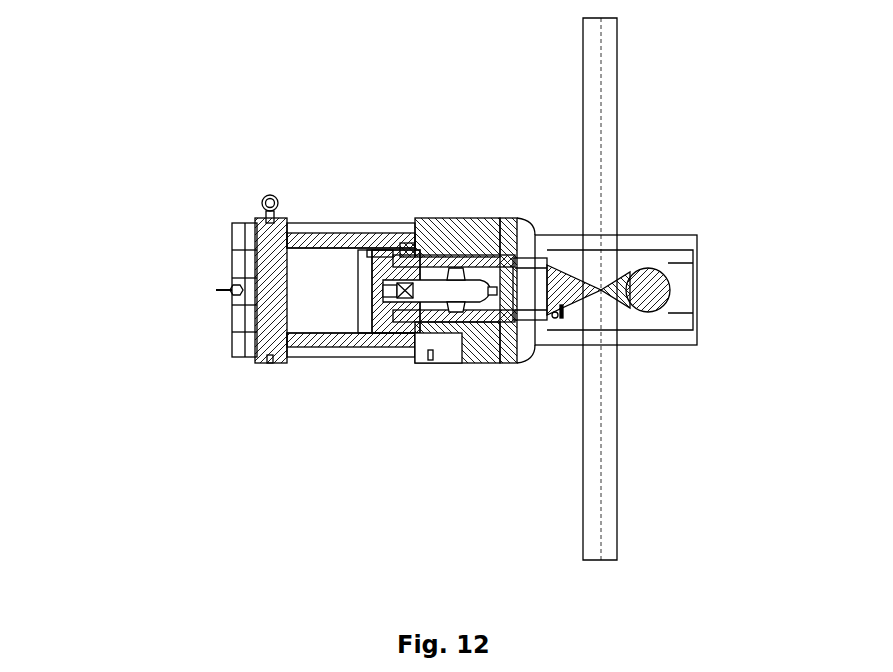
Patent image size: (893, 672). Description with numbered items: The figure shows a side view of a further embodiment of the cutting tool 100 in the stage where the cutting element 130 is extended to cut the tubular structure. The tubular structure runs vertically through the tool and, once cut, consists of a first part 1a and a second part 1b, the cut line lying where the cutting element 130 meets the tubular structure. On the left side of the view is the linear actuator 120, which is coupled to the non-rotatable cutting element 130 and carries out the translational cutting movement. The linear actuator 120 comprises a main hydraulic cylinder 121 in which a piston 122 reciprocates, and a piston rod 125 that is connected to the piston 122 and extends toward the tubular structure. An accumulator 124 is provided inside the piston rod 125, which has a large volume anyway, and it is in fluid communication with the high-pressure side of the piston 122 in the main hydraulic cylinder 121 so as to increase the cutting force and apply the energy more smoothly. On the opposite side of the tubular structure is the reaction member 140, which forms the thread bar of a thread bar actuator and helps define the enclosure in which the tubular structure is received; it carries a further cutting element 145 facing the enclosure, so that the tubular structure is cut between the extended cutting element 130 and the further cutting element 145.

The cutting tool 100 is at (112, 123).
The first part 1a is at (608, 432).
The second part 1b is at (608, 173).
The linear actuator 120 is at (233, 315).
The main hydraulic cylinder 121 is at (322, 335).
The piston 122 is at (395, 243).
The accumulator 124 is at (452, 288).
The piston rod 125 is at (468, 240).
The cutting element 130 is at (567, 252).
The reaction member 140 is at (698, 263).
The further cutting element 145 is at (680, 298).